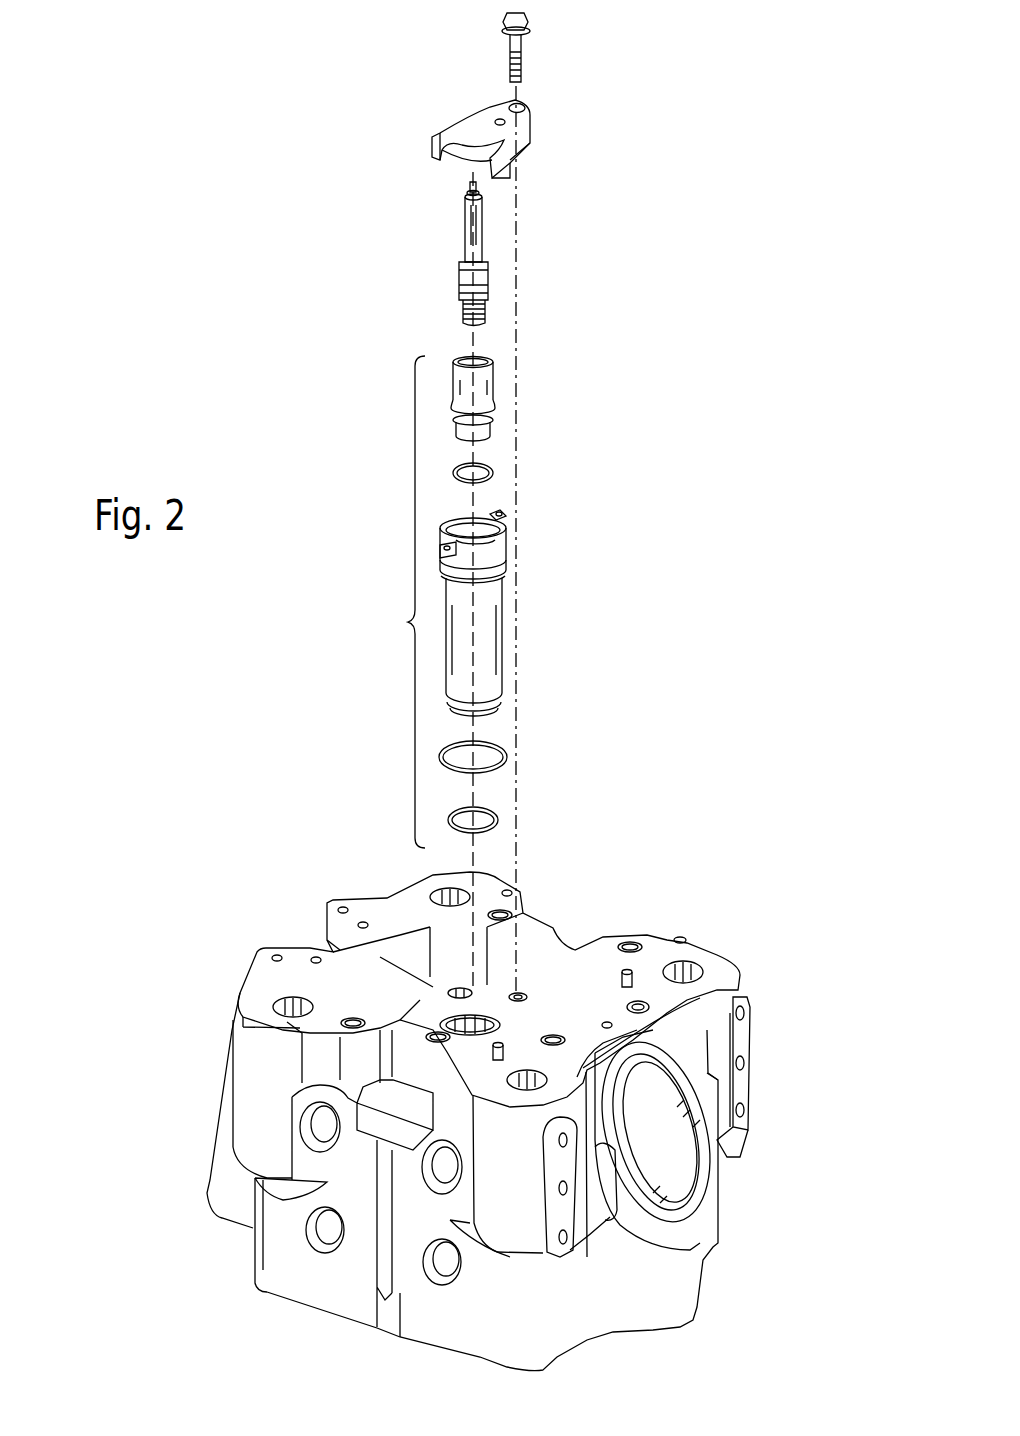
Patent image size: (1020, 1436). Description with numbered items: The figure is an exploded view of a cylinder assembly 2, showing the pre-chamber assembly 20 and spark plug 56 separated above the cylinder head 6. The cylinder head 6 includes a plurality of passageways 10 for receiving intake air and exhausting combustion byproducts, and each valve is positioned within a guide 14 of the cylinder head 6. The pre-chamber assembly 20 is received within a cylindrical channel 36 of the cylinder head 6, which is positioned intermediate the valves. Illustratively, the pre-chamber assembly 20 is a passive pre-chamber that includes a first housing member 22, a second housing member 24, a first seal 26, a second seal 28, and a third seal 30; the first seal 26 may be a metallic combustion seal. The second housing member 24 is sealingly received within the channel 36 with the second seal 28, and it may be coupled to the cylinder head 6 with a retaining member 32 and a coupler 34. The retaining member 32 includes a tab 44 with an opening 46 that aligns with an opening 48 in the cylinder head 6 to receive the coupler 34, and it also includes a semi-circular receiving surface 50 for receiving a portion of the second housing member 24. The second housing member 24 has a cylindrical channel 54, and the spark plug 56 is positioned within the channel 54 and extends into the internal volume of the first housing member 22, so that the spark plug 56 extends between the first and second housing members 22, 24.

The cylinder assembly 2 is at (770, 126).
The cylinder head 6 is at (503, 1095).
The passageways 10 is at (687, 1157).
The guide 14 is at (447, 993).
The pre-chamber assembly 20 is at (492, 602).
The first housing member 22 is at (495, 382).
The second housing member 24 is at (493, 642).
The first seal 26 is at (495, 468).
The second seal 28 is at (510, 748).
The third seal 30 is at (500, 815).
The retaining member 32 is at (440, 122).
The coupler 34 is at (528, 18).
The cylindrical channel 36 is at (460, 1025).
The tab 44 is at (528, 128).
The opening 46 is at (532, 96).
The opening 48 is at (520, 993).
The semi-circular receiving surface 50 is at (486, 103).
The cylindrical channel 54 is at (490, 543).
The spark plug 56 is at (465, 230).